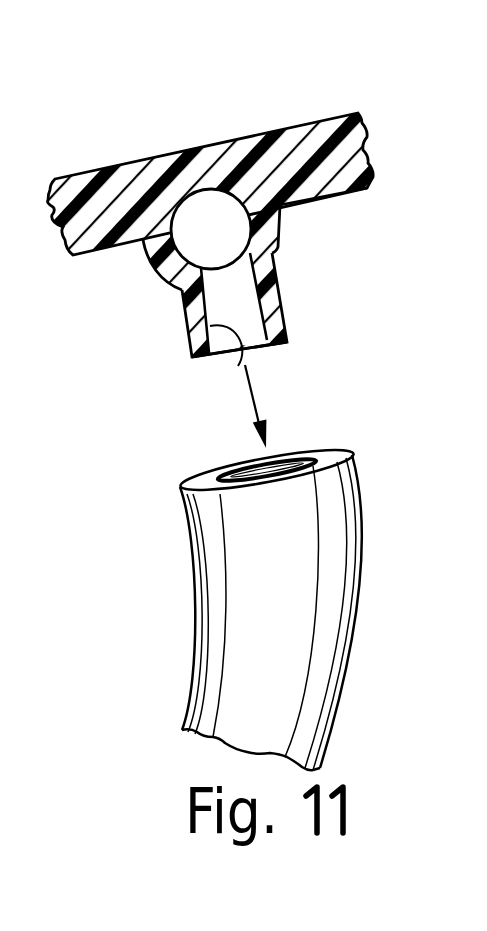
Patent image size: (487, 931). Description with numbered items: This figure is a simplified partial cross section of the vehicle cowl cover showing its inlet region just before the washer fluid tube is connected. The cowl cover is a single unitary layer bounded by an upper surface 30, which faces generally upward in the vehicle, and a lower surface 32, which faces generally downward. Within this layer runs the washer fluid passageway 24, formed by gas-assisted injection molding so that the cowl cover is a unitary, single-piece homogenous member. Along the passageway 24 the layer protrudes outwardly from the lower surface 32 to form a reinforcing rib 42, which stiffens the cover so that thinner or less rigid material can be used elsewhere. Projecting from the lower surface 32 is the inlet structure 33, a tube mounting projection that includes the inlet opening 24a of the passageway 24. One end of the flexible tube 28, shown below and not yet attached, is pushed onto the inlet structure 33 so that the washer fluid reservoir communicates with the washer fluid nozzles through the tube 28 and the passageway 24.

The upper surface 30 is at (250, 126).
The washer fluid passageway 24 is at (195, 192).
The inlet opening 24a is at (238, 366).
The flexible tube 28 is at (358, 637).
The lower surface 32 is at (332, 209).
The inlet structure 33 is at (172, 327).
The reinforcing rib 42 is at (152, 266).